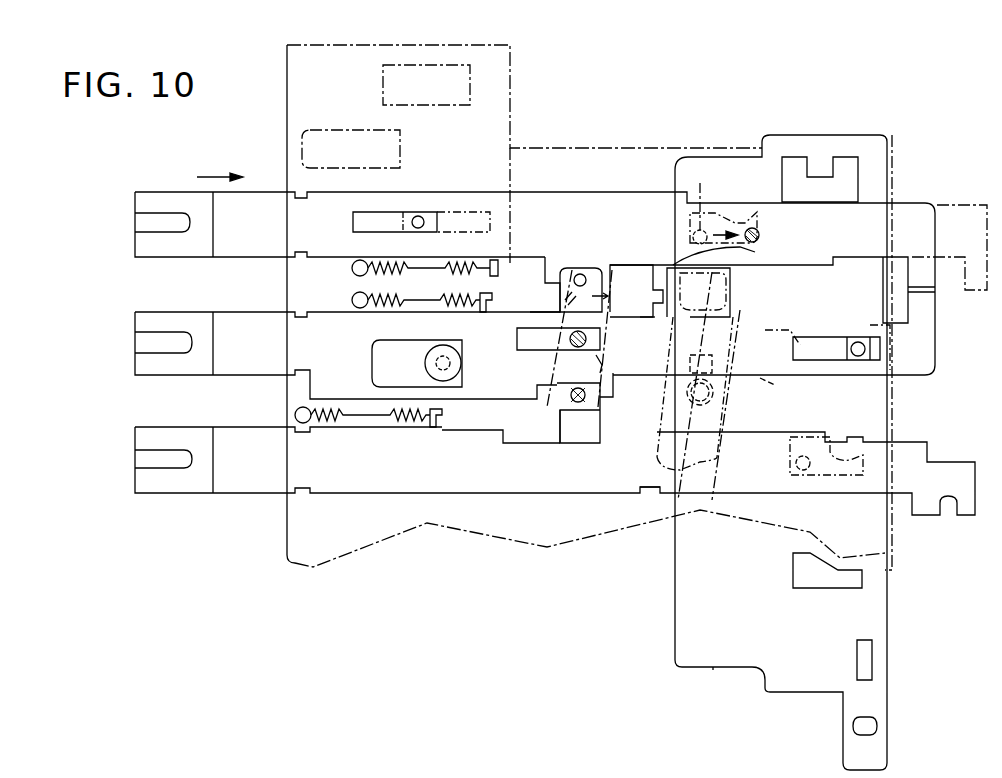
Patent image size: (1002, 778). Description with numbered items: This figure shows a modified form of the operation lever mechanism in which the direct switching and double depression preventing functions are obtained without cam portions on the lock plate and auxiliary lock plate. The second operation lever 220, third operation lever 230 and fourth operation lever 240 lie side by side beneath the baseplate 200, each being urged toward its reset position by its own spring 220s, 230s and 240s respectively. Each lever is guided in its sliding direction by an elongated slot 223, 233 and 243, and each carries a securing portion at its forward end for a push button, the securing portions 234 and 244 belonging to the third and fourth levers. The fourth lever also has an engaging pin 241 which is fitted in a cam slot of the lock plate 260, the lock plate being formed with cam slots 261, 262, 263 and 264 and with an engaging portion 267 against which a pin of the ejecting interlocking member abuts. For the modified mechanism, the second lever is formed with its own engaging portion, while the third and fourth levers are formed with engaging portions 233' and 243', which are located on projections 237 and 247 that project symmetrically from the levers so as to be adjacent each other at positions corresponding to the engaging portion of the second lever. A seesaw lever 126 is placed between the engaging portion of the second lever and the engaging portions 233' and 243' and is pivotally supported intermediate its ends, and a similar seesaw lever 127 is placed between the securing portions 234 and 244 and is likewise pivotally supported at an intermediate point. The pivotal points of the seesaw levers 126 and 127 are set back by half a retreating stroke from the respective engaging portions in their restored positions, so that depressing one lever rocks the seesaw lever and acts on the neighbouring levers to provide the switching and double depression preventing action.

The baseplate 200 is at (614, 148).
The engaging pin 241 is at (698, 183).
The elongated slot 243 is at (421, 201).
The fourth operation lever 240 is at (546, 213).
The spring 240s is at (398, 265).
The securing portion 244 is at (542, 268).
The cam slot 264 is at (690, 236).
The engaging portion 243' is at (636, 280).
The projection 247 is at (737, 252).
The projection 237 is at (712, 300).
The seesaw lever 127 is at (560, 300).
The seesaw lever 126 is at (733, 303).
The elongated slot 233 is at (696, 335).
The engaging portion 233' is at (646, 324).
The spring 230s is at (375, 302).
The third operation lever 230 is at (493, 387).
The securing portion 234 is at (600, 415).
The spring 220s is at (342, 423).
The elongated slot 223 is at (642, 490).
The second operation lever 220 is at (513, 494).
The cam slot 263 is at (768, 385).
The cam slot 262 is at (805, 470).
The lock plate 260 is at (682, 568).
The cam slot 261 is at (793, 572).
The engaging portion 267 is at (713, 667).